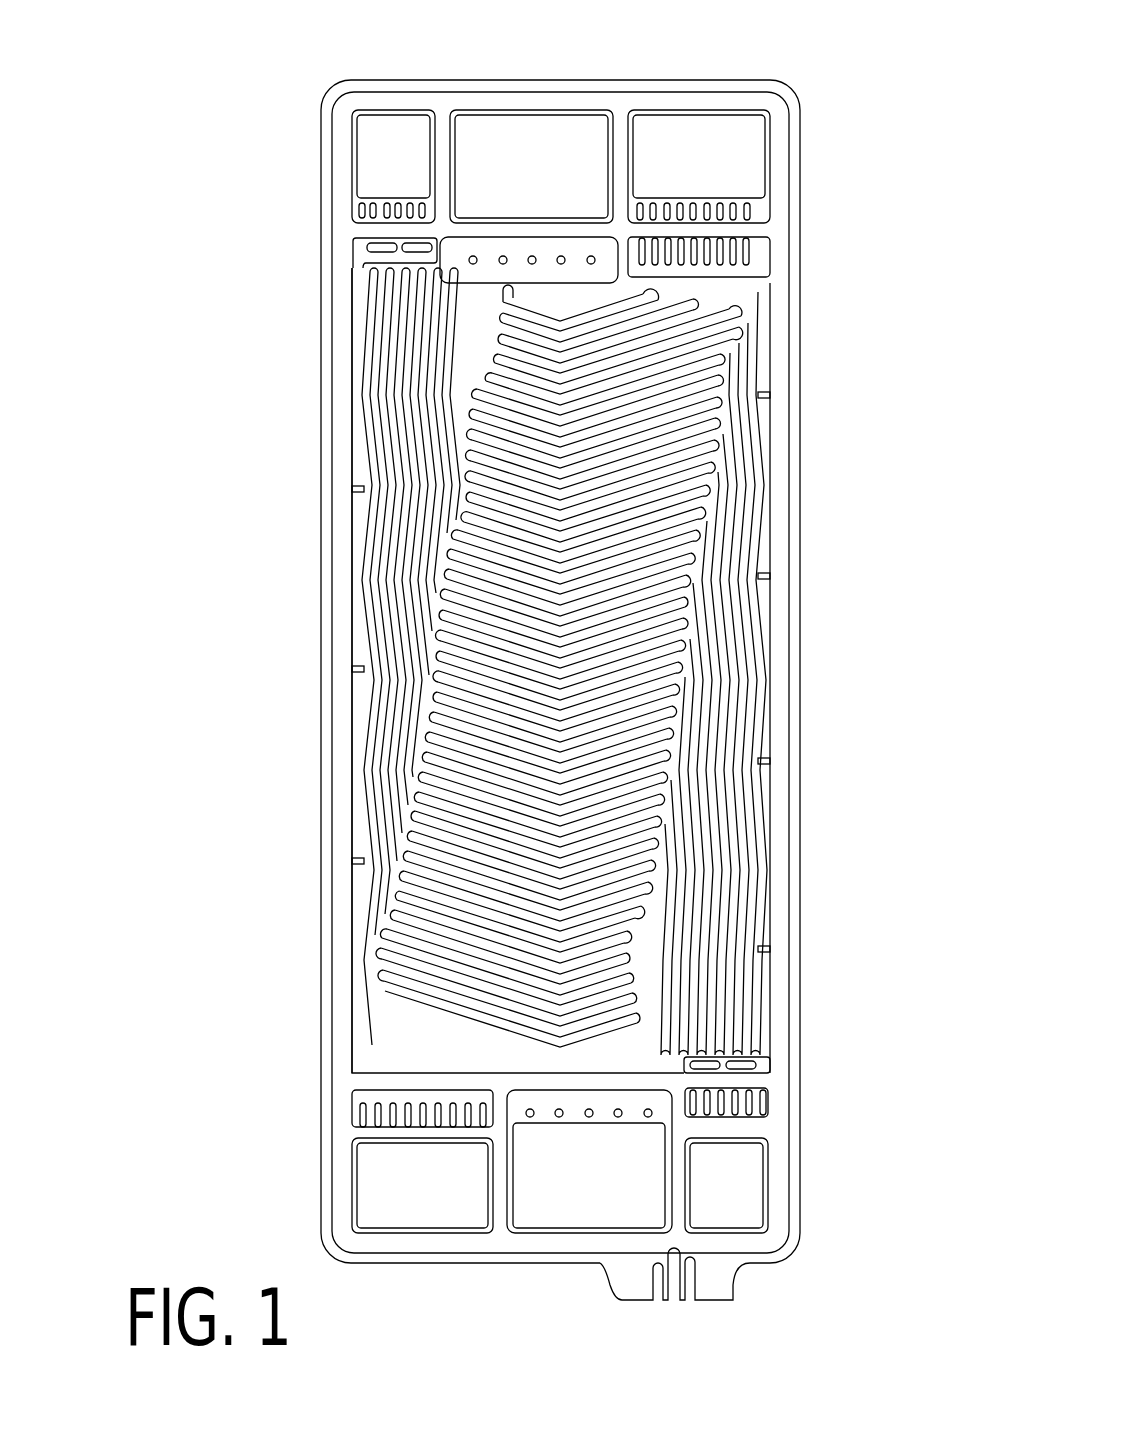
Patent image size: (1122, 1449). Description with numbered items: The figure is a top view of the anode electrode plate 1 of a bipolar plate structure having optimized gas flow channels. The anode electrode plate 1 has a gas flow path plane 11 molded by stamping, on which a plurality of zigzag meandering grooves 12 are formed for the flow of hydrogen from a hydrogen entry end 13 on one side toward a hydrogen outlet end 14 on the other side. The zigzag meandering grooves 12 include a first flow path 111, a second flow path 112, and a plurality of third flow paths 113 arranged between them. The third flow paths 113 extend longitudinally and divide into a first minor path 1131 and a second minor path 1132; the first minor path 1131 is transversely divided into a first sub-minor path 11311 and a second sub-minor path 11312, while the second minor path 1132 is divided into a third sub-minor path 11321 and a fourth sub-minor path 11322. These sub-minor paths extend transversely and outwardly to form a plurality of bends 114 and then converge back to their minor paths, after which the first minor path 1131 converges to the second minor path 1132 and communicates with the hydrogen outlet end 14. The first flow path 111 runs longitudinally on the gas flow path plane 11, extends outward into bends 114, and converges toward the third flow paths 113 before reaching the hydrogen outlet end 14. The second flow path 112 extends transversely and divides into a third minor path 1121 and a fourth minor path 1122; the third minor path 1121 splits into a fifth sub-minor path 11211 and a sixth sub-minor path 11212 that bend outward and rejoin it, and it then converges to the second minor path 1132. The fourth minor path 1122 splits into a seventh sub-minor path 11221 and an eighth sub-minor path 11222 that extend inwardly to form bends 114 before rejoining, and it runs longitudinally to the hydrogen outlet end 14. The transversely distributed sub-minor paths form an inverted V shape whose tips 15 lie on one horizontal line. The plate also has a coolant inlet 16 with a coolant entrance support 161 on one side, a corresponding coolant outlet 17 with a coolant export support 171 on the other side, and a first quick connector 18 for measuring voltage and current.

The anode electrode plate 1 is at (783, 76).
The gas flow path plane 11 is at (760, 355).
The first flow path 111 is at (363, 590).
The second flow path 112 is at (460, 292).
The third flow paths 113 is at (135, 316).
The first minor path 1131 is at (383, 357).
The second minor path 1132 is at (390, 373).
The bends 114 is at (400, 962).
The third minor path 1121 is at (473, 375).
The fifth sub-minor path 11211 is at (472, 400).
The sixth sub-minor path 11212 is at (493, 397).
The fourth minor path 1122 is at (493, 292).
The seventh sub-minor path 11221 is at (493, 322).
The eighth sub-minor path 11222 is at (528, 312).
The third sub-minor path 11321 is at (365, 765).
The fourth sub-minor path 11322 is at (395, 883).
The first sub-minor path 11311 is at (405, 878).
The second sub-minor path 11312 is at (395, 950).
The zigzag meandering grooves 12 is at (752, 555).
The hydrogen entry end 13 is at (404, 127).
The hydrogen outlet end 14 is at (742, 1197).
The tips 15 is at (360, 1012).
The coolant inlet 16 is at (520, 128).
The coolant entrance support 161 is at (589, 255).
The coolant outlet 17 is at (572, 1200).
The coolant export support 171 is at (618, 1118).
The first quick connector 18 is at (720, 1290).